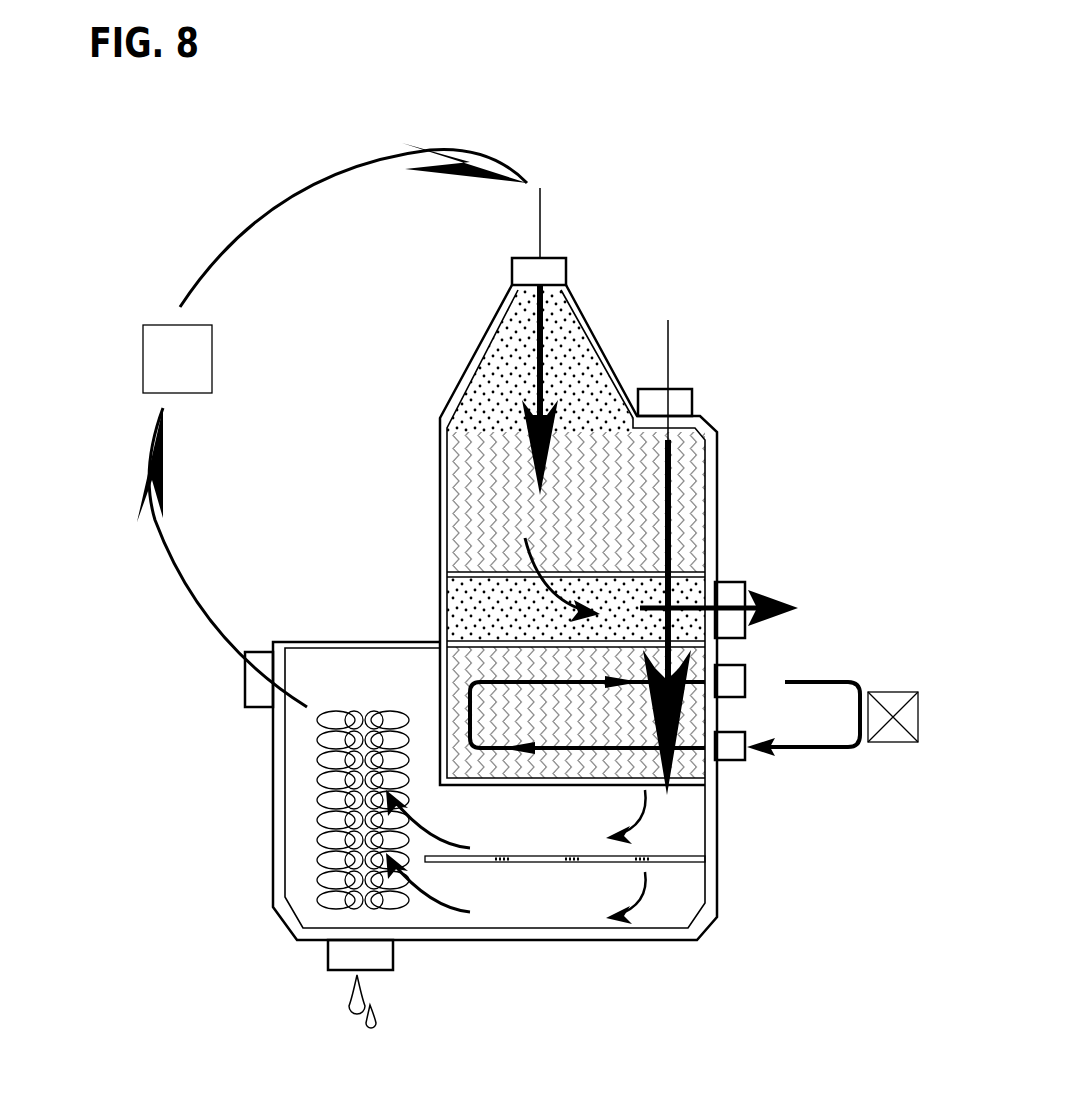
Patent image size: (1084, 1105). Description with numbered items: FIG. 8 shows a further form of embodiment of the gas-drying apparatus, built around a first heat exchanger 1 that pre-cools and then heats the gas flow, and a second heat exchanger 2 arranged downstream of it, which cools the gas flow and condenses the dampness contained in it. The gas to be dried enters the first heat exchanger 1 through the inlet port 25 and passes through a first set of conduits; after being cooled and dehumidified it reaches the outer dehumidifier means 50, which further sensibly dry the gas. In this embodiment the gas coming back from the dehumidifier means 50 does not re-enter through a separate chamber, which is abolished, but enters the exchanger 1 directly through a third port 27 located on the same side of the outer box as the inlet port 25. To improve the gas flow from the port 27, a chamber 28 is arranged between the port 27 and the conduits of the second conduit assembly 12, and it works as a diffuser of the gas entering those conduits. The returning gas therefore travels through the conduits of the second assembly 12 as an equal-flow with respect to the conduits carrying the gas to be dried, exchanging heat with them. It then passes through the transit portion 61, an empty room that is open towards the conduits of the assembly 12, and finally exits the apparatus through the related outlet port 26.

The first heat exchanger 1 is at (680, 482).
The second heat exchanger 2 is at (612, 757).
The second conduit assembly 12 is at (476, 482).
The inlet port 25 is at (686, 400).
The outlet port 26 is at (728, 595).
The third port 27 is at (548, 270).
The chamber 28 is at (572, 347).
The dehumidifier means 50 is at (163, 345).
The transit portion 61 is at (472, 610).